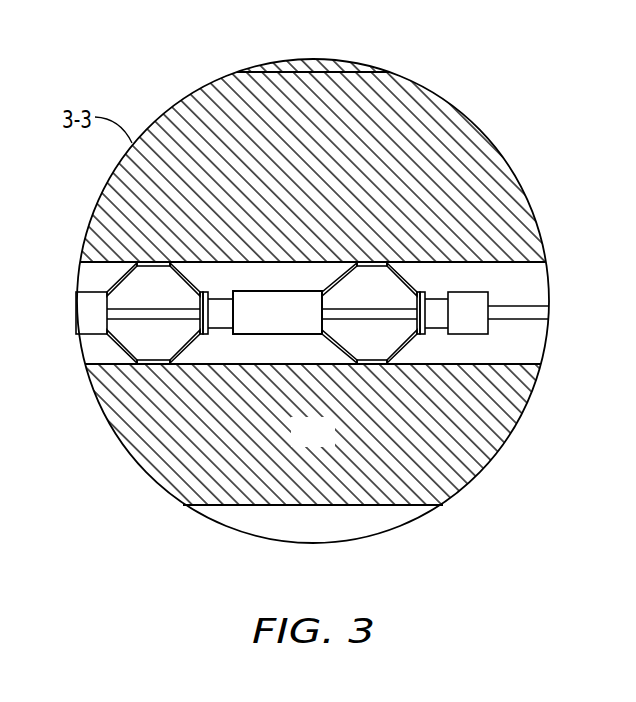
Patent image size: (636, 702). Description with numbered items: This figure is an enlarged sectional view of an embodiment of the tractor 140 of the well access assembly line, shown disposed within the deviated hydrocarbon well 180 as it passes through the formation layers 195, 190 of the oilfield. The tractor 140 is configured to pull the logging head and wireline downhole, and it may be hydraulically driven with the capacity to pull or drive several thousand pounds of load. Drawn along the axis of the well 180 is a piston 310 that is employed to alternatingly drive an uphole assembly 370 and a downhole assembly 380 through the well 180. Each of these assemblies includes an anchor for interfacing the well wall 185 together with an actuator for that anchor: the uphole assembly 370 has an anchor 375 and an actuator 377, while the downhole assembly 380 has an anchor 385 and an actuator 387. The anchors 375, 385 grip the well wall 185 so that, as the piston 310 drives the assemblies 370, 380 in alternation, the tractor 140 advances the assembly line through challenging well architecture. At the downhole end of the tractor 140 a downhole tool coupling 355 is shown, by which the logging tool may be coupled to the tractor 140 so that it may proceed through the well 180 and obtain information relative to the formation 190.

The tractor 140 is at (303, 270).
The well 180 is at (271, 358).
The well wall 185 is at (212, 262).
The formation layer 190 is at (331, 444).
The formation layer 195 is at (320, 64).
The piston 310 is at (143, 313).
The downhole tool coupling 355 is at (540, 307).
The uphole assembly 370 is at (208, 347).
The anchor 375 is at (112, 283).
The actuator 377 is at (292, 300).
The downhole assembly 380 is at (439, 280).
The anchor 385 is at (399, 344).
The actuator 387 is at (435, 320).